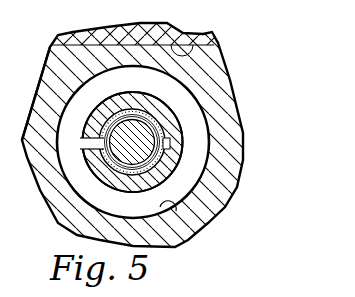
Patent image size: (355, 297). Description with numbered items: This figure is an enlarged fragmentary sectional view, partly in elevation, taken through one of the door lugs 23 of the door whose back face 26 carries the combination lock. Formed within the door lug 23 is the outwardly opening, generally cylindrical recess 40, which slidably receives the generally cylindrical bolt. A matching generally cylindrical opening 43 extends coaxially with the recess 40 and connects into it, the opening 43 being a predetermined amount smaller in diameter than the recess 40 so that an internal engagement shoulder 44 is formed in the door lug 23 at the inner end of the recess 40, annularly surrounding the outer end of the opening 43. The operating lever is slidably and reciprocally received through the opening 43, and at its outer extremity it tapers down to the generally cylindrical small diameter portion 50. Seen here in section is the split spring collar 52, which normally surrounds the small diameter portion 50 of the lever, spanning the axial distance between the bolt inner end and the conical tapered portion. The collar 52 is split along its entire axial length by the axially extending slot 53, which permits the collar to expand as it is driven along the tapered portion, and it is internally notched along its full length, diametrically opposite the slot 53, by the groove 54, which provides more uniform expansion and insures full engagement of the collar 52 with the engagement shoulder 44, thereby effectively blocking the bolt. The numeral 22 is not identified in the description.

The door lug 23 is at (226, 208).
The back face 26 is at (203, 34).
The housing wall 22 is at (14, 146).
The internal engagement shoulder 44 is at (76, 190).
The recess 40 is at (175, 214).
The split spring collar 52 is at (157, 110).
The groove 54 is at (182, 150).
The slot 53 is at (82, 147).
The small diameter portion 50 is at (123, 136).
The opening 43 is at (82, 140).